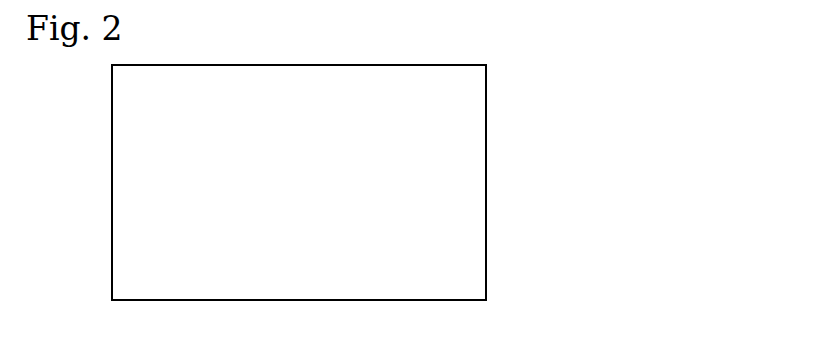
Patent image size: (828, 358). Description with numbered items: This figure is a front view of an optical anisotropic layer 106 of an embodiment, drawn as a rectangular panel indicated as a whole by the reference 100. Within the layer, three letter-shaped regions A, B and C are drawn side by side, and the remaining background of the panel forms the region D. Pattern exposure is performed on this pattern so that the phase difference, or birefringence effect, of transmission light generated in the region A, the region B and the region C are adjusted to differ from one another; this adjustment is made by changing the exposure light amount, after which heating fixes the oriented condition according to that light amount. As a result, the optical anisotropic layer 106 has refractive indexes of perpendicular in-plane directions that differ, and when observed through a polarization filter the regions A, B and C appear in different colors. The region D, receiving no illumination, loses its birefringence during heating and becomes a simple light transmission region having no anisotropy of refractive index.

The optical film / display member 100 is at (505, 161).
The optical anisotropic layer 106 is at (462, 262).
The area A is at (183, 188).
The area B is at (290, 205).
The area C is at (406, 205).
The area D is at (467, 94).